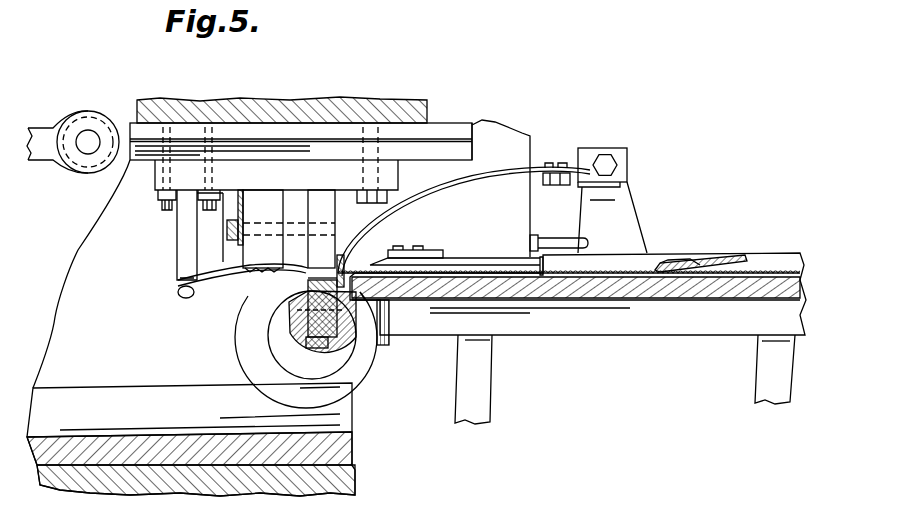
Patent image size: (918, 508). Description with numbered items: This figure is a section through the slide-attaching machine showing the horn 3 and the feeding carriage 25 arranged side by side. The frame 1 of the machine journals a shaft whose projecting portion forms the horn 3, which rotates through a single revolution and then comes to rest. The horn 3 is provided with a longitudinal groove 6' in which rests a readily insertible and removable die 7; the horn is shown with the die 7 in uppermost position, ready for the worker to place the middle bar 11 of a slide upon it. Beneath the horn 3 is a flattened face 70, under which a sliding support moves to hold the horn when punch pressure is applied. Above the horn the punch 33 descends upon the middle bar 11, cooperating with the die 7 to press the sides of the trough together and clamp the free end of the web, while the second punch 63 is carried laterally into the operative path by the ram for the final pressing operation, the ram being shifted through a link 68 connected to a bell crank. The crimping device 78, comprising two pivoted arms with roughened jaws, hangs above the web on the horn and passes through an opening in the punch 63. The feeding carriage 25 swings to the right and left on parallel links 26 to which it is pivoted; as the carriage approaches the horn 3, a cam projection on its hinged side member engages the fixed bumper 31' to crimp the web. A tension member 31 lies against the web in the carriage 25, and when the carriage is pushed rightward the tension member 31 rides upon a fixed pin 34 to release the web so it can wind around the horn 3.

The frame 1 is at (388, 99).
The link 68 is at (76, 114).
The second punch 63 is at (280, 176).
The punch 33 is at (340, 176).
The tension member 31 is at (463, 218).
The bumper 31' is at (417, 236).
The fixed pin 34 is at (568, 215).
The crimping device 78 is at (222, 268).
The middle bar 11 is at (308, 275).
The longitudinal groove 6' is at (282, 322).
The die 7 is at (300, 340).
The horn 3 is at (367, 365).
The flattened face 70 is at (321, 394).
The feeding carriage 25 is at (590, 294).
The parallel links 26 is at (483, 380).